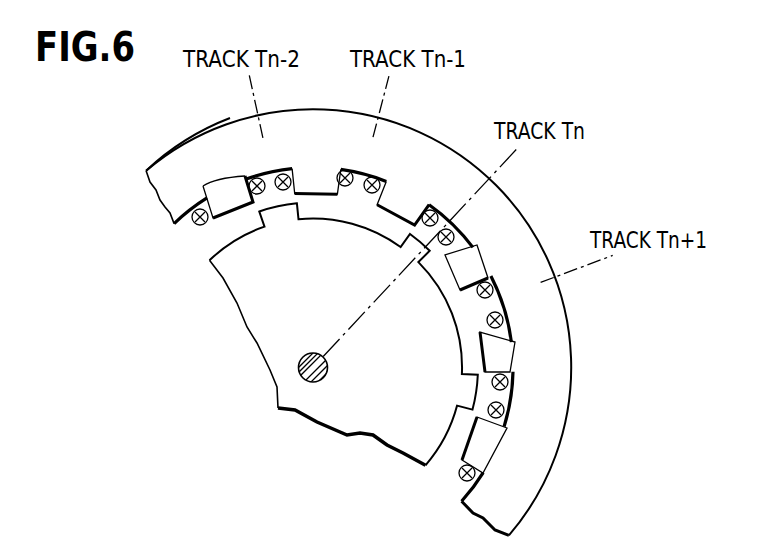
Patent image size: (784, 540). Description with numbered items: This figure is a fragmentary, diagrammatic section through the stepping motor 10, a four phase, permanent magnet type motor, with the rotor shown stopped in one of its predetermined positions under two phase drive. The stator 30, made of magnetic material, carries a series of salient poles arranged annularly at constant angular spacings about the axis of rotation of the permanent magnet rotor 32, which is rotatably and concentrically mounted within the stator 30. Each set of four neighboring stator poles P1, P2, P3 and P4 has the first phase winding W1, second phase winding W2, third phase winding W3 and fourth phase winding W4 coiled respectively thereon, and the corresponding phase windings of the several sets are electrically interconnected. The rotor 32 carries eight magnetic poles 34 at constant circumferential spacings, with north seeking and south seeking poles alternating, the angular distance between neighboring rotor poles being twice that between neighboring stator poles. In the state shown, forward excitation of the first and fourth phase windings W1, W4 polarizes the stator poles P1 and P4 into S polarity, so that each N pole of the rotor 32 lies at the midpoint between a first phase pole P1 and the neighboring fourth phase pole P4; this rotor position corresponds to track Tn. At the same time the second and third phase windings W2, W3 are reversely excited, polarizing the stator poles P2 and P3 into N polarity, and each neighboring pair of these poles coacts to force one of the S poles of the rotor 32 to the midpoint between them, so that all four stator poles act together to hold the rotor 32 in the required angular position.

The stepping motor 10 is at (150, 148).
The stator 30 is at (393, 322).
The permanent magnet rotor 32 is at (248, 347).
The magnetic poles 34 is at (407, 242).
The first phase winding W1 is at (488, 278).
The second phase winding W2 is at (522, 347).
The third phase winding W3 is at (339, 172).
The fourth phase winding W4 is at (427, 205).
The first phase stator pole P1 is at (460, 289).
The second phase stator pole P2 is at (483, 350).
The third phase stator pole P3 is at (320, 193).
The fourth phase stator pole P4 is at (389, 213).